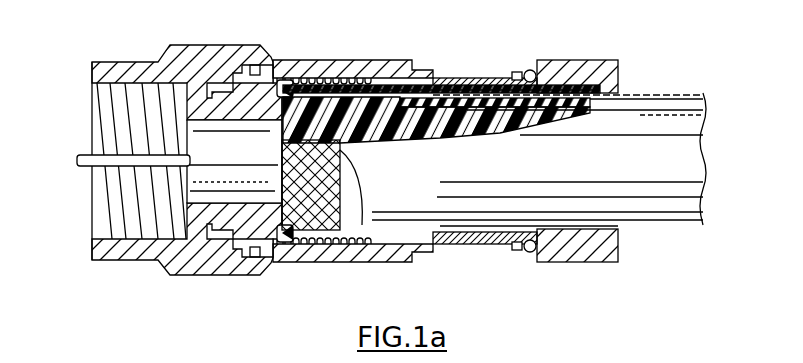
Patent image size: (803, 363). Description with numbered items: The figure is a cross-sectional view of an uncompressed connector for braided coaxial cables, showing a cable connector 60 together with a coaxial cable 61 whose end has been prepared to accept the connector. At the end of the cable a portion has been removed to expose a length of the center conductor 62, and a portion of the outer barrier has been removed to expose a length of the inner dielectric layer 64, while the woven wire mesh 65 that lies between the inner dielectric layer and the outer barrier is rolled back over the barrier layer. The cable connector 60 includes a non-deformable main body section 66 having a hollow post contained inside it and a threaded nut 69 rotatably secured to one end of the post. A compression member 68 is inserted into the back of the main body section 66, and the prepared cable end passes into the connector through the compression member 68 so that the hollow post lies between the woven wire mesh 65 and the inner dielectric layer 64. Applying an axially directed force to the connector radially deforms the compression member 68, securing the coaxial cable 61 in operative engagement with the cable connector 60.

The cable connector 60 is at (380, 159).
The coaxial cable 61 is at (683, 225).
The center conductor 62 is at (77, 160).
The inner dielectric layer 64 is at (241, 195).
The woven wire mesh 65 is at (364, 228).
The non-deformable main body section 66 is at (320, 262).
The compression member 68 is at (618, 262).
The threaded nut 69 is at (118, 262).